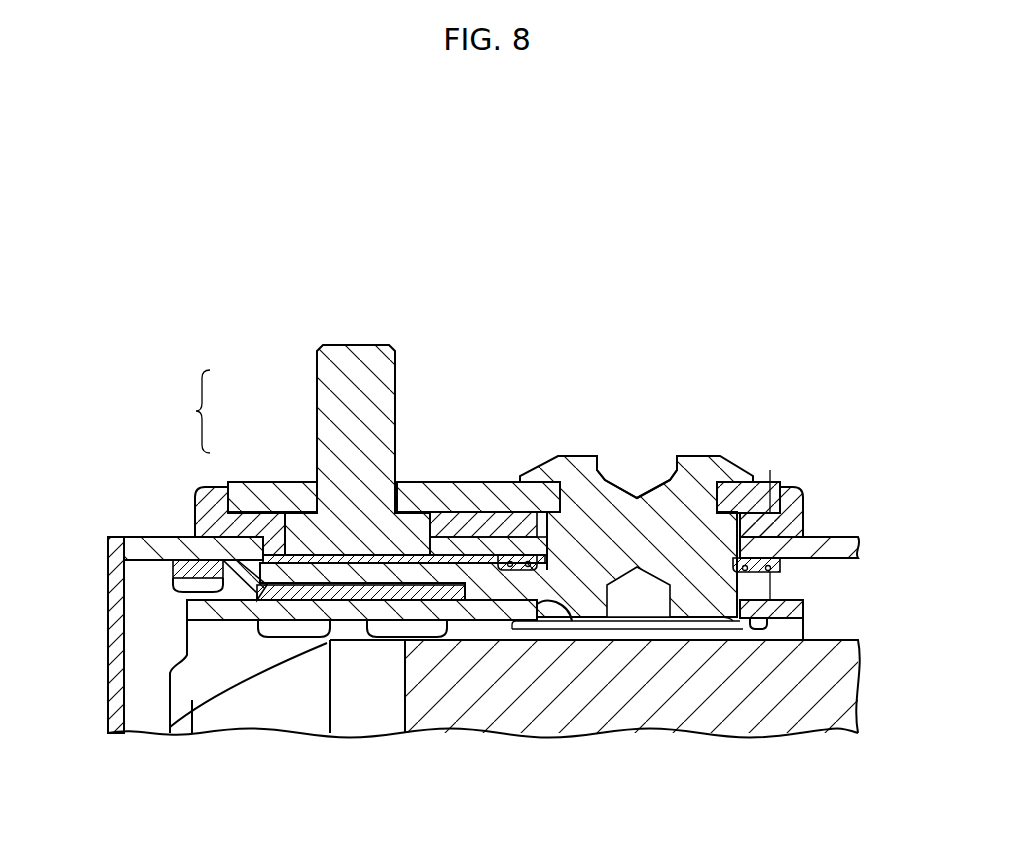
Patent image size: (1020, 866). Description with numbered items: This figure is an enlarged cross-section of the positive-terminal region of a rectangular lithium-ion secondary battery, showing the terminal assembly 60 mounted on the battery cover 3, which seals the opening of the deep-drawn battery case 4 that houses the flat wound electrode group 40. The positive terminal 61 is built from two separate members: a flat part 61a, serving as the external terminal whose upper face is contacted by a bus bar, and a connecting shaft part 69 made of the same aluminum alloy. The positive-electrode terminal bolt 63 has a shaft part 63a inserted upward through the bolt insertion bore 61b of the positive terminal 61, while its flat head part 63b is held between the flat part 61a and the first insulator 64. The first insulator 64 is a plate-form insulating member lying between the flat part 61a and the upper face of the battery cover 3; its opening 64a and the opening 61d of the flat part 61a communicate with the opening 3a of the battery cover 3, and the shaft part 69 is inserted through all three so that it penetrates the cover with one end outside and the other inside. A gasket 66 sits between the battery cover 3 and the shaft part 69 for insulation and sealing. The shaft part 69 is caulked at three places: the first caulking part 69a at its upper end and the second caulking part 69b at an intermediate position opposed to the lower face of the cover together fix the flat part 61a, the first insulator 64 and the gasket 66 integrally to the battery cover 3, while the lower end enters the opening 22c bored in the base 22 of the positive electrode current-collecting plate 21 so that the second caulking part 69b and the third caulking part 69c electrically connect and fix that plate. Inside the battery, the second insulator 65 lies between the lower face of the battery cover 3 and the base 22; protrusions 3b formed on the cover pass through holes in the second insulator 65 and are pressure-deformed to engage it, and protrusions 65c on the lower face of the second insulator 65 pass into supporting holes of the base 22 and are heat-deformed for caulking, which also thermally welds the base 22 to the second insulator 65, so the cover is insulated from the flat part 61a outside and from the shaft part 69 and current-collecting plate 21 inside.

The battery cover 3 is at (123, 542).
The opening of the battery cover 3a is at (573, 477).
The protrusions 3b is at (187, 583).
The battery case 4 is at (120, 705).
The positive electrode current-collecting plate 21 is at (183, 650).
The base 22 is at (477, 608).
The opening 22c is at (540, 603).
The electrode group 40 is at (843, 638).
The fastening structure 60 is at (252, 281).
The positive terminal 61 is at (498, 503).
The flat part 61a is at (470, 493).
The bolt insertion bore 61b is at (400, 495).
The opening of the flat part 61d is at (716, 503).
The positive-electrode terminal bolt 63 is at (186, 411).
The shaft part 63a is at (333, 380).
The head part 63b is at (307, 527).
The first insulator 64 is at (200, 512).
The opening of the first insulator 64a is at (738, 520).
The second insulator 65 is at (355, 592).
The protrusions 65c is at (300, 634).
The gasket 66 is at (769, 470).
The shaft part 69 is at (615, 503).
The first caulking part 69a is at (545, 550).
The second caulking part 69b is at (752, 587).
The third caulking part 69c is at (760, 630).